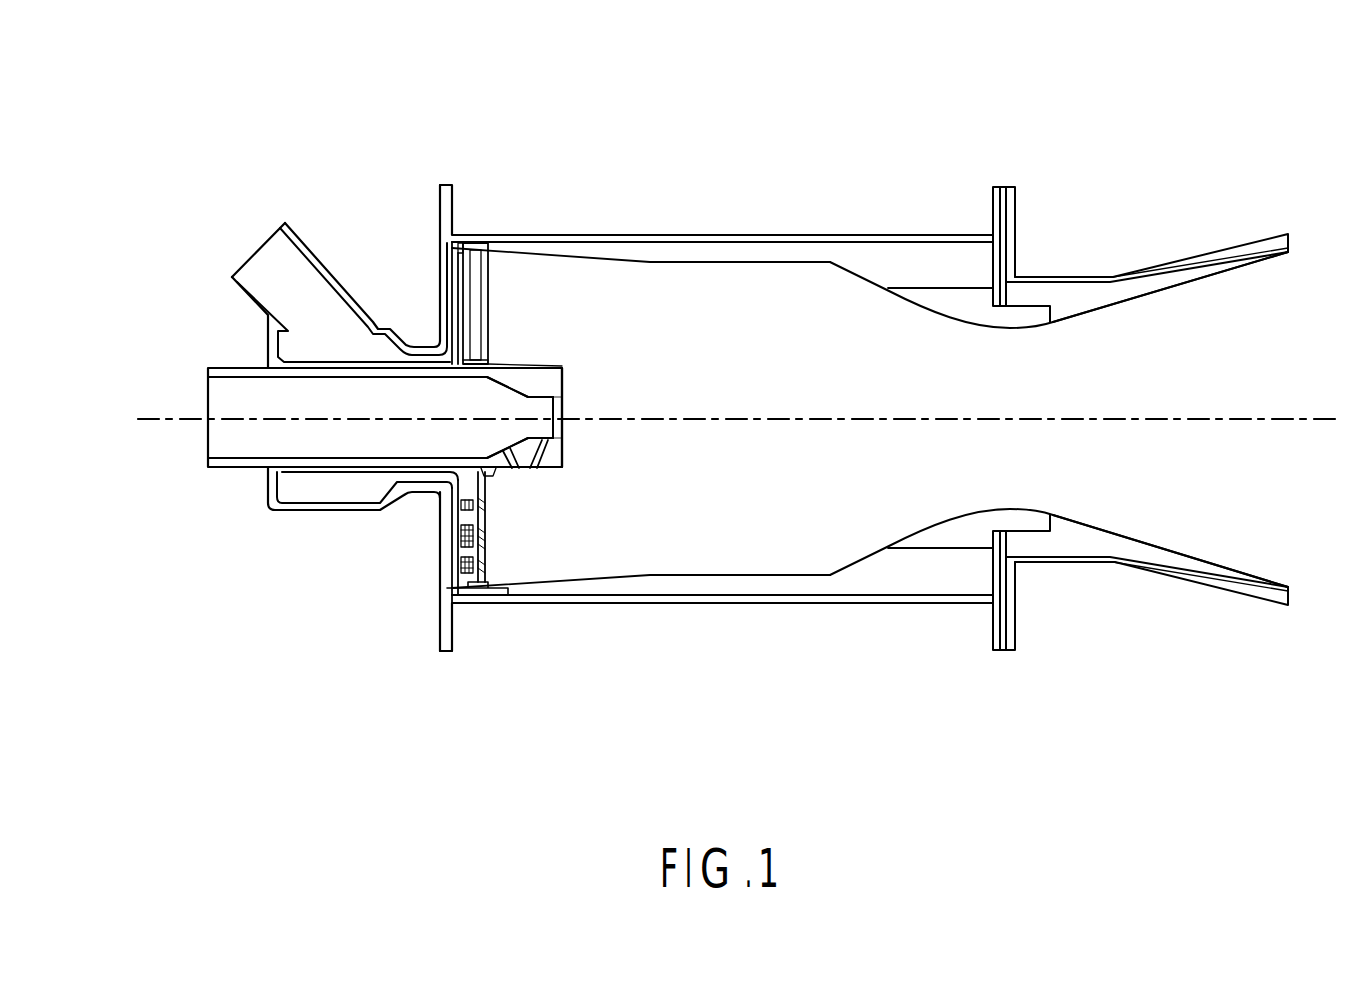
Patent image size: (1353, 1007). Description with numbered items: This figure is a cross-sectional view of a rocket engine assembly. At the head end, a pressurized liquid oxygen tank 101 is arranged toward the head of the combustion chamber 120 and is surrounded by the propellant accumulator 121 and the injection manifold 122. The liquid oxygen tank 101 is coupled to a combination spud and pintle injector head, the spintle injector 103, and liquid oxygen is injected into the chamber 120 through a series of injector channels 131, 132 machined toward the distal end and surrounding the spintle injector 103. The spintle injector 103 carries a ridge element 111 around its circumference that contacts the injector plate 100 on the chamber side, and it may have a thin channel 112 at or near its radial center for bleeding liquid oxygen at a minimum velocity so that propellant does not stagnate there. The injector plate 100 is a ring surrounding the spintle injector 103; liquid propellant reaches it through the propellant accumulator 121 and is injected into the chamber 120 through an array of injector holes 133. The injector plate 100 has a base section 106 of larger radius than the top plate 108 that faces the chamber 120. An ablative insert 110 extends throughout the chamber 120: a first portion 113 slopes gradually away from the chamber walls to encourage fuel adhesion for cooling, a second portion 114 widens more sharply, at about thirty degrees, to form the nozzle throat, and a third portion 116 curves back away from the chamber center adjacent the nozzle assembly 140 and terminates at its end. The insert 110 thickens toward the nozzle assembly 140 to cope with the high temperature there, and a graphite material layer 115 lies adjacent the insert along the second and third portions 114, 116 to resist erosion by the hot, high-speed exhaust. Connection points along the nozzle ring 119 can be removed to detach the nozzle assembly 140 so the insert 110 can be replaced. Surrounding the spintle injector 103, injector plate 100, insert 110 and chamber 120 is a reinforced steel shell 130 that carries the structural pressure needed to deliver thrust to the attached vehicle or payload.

The injector plate 100 is at (472, 302).
The pressurized liquid oxygen tank 101 is at (208, 384).
The spintle injector 103 is at (563, 378).
The base section 106 is at (460, 333).
The top plate 108 is at (487, 266).
The ablative insert 110 is at (830, 253).
The ridge element 111 is at (489, 363).
The thin channel 112 is at (563, 418).
The first portion 113 is at (798, 578).
The second portion 114 is at (878, 577).
The graphite material layer 115 is at (1035, 523).
The third portion 116 is at (1168, 562).
The nozzle ring 119 is at (1013, 186).
The combustion chamber 120 is at (740, 425).
The propellant accumulator 121 is at (270, 508).
The injection manifold 122 is at (445, 261).
The reinforced steel shell 130 is at (607, 606).
The injector channel 131 is at (521, 472).
The injector channel 132 is at (541, 470).
The injector holes 133 is at (470, 545).
The nozzle assembly 140 is at (1258, 482).